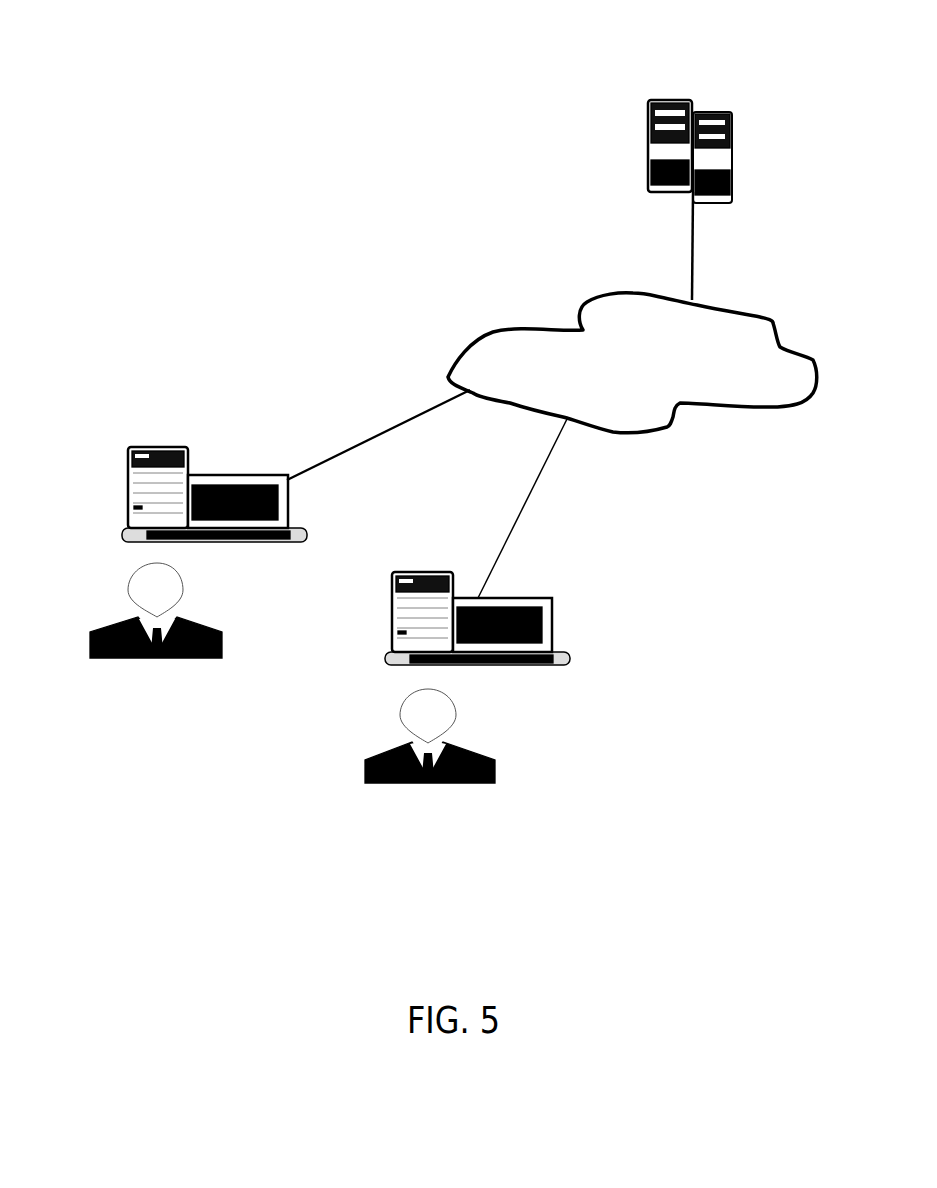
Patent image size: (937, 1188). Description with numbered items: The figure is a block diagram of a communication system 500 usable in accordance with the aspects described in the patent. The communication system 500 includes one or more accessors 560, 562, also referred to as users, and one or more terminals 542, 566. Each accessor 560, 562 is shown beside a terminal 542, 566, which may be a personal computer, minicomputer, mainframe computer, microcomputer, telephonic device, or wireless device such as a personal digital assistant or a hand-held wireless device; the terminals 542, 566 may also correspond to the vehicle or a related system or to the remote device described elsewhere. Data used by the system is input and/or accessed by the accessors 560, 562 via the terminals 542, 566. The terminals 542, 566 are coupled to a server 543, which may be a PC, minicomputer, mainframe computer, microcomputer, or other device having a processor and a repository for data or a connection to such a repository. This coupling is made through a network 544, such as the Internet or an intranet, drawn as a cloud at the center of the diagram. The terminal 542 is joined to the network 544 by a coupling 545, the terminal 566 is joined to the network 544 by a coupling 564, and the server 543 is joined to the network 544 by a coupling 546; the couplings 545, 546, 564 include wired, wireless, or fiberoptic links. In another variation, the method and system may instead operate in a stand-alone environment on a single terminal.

The communication system 500 is at (170, 60).
The terminal 542 is at (157, 447).
The server 543 is at (673, 100).
The network 544 is at (503, 330).
The coupling 545 is at (328, 458).
The coupling 546 is at (695, 260).
The accessor 560 is at (123, 620).
The accessor 562 is at (473, 748).
The coupling 564 is at (543, 470).
The terminal 566 is at (552, 598).